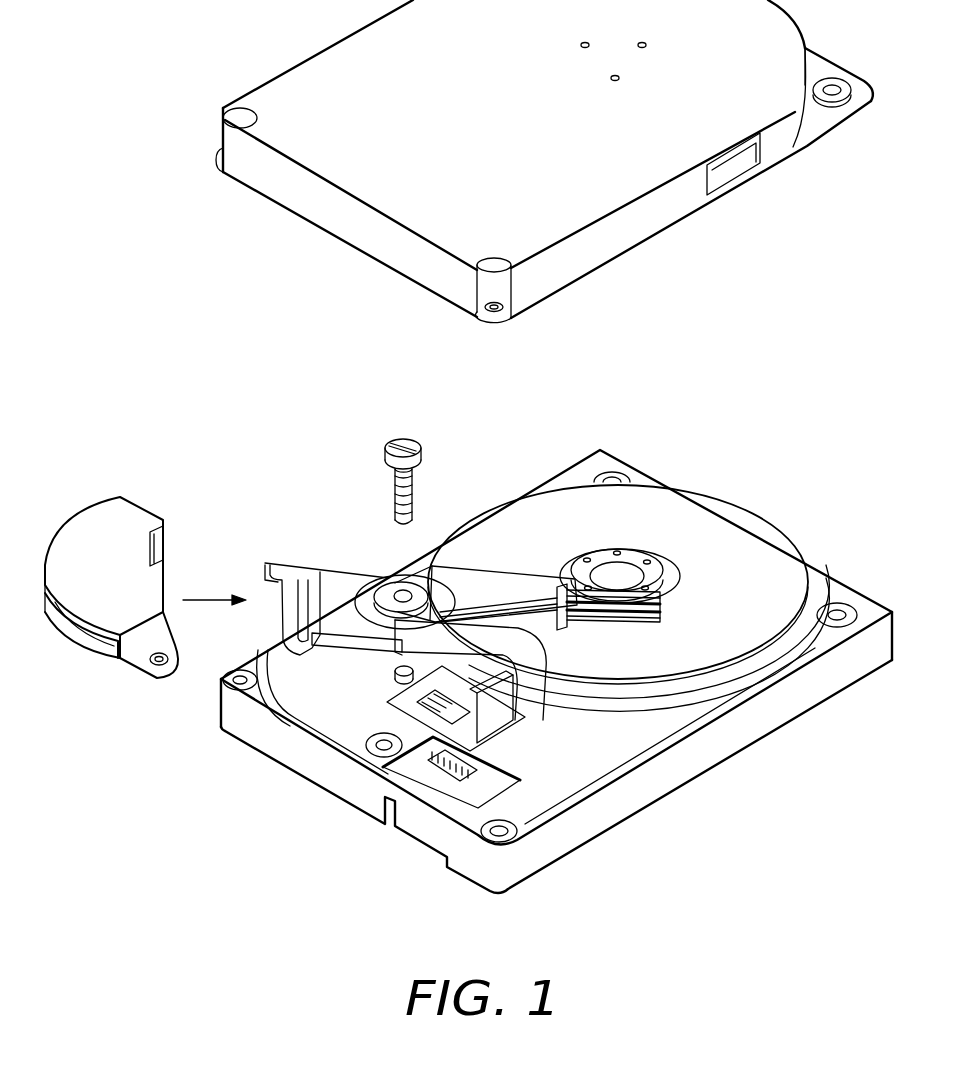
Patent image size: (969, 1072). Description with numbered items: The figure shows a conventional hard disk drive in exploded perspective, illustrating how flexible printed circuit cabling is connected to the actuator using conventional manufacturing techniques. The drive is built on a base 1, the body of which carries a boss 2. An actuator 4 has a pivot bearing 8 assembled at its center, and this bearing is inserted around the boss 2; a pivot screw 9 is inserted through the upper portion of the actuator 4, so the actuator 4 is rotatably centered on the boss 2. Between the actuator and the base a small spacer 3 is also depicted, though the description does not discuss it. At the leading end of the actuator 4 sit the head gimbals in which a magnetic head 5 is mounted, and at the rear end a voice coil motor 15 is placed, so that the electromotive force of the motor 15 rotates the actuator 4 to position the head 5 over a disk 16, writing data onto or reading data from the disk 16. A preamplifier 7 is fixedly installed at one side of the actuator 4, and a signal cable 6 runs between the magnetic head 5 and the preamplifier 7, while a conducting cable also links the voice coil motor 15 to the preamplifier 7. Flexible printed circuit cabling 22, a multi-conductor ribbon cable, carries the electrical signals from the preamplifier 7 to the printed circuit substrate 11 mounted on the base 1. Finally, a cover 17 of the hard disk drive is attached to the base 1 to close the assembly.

The base 1 is at (763, 728).
The boss 2 is at (393, 684).
The spacer 3 is at (400, 666).
The actuator 4 is at (480, 580).
The magnetic head 5 is at (660, 612).
The signal cable 6 is at (513, 593).
The preamplifier 7 is at (388, 633).
The pivot bearing 8 is at (388, 592).
The pivot screw 9 is at (392, 438).
The printed circuit substrate 11 is at (400, 707).
The voice coil motor 15 is at (310, 580).
The disk 16 is at (727, 523).
The cover 17 is at (648, 227).
The flexible printed circuit cabling 22 is at (525, 690).